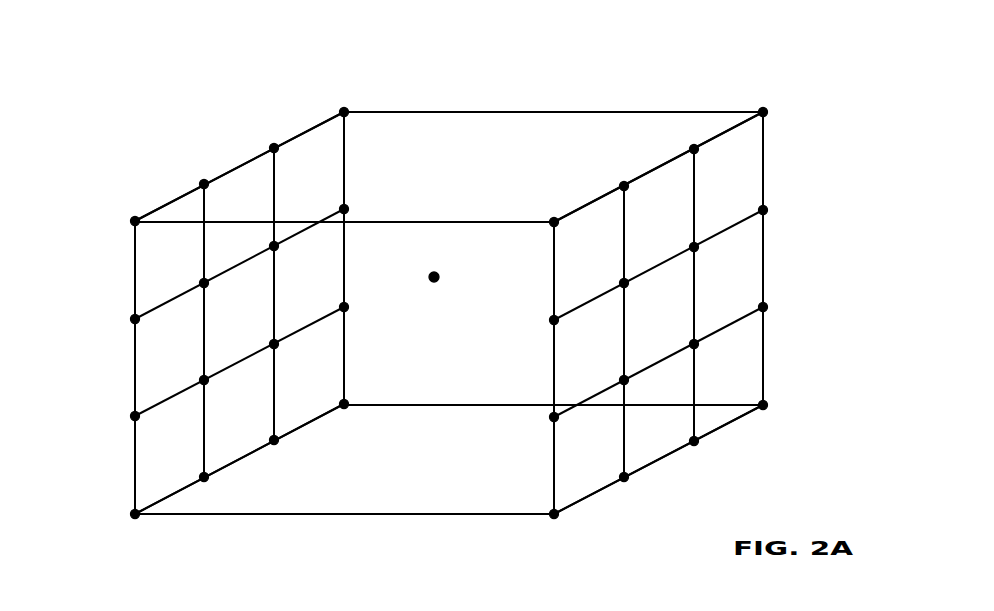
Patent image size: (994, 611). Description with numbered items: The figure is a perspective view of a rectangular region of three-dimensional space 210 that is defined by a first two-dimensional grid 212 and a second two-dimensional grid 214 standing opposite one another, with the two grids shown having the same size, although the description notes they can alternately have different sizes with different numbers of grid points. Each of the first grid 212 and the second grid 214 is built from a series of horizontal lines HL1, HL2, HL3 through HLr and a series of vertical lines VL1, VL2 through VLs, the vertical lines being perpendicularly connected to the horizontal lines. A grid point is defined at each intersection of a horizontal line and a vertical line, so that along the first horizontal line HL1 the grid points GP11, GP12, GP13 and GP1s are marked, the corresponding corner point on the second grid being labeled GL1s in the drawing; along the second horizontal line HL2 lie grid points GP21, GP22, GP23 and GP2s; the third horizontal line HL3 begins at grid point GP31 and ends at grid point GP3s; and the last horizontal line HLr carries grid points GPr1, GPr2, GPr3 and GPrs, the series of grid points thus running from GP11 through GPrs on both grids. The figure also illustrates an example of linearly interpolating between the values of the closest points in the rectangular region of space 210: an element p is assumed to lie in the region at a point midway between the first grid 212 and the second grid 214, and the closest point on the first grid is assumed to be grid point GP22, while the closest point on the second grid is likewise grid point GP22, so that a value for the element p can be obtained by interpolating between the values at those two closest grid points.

The rectangular region of 3D space 210 is at (636, 64).
The first 2D grid 212 is at (310, 130).
The second 2D grid 214 is at (768, 253).
The first horizontal line HL1 is at (172, 198).
The second horizontal line HL2 is at (160, 303).
The third horizontal line HL3 is at (160, 403).
The r-th horizontal line HLr is at (162, 498).
The first vertical line VL1 is at (134, 238).
The second vertical line VL2 is at (204, 335).
The s-th vertical line VLs is at (345, 160).
The grid point GP11 is at (134, 220).
The grid point GP12 is at (204, 182).
The grid point GP13 is at (274, 146).
The grid point GP1s is at (344, 110).
The grid point (1,s) GL1s is at (770, 113).
The grid point GP2s is at (346, 208).
The grid point GP3s is at (346, 305).
The grid point GPrs is at (346, 402).
The grid point GP21 is at (134, 319).
The grid point GP22 is at (623, 282).
The grid point GP23 is at (693, 246).
The grid point GP31 is at (134, 416).
The grid point GPr1 is at (134, 514).
The grid point GPr2 is at (625, 481).
The grid point GPr3 is at (695, 445).
The element p is at (434, 294).